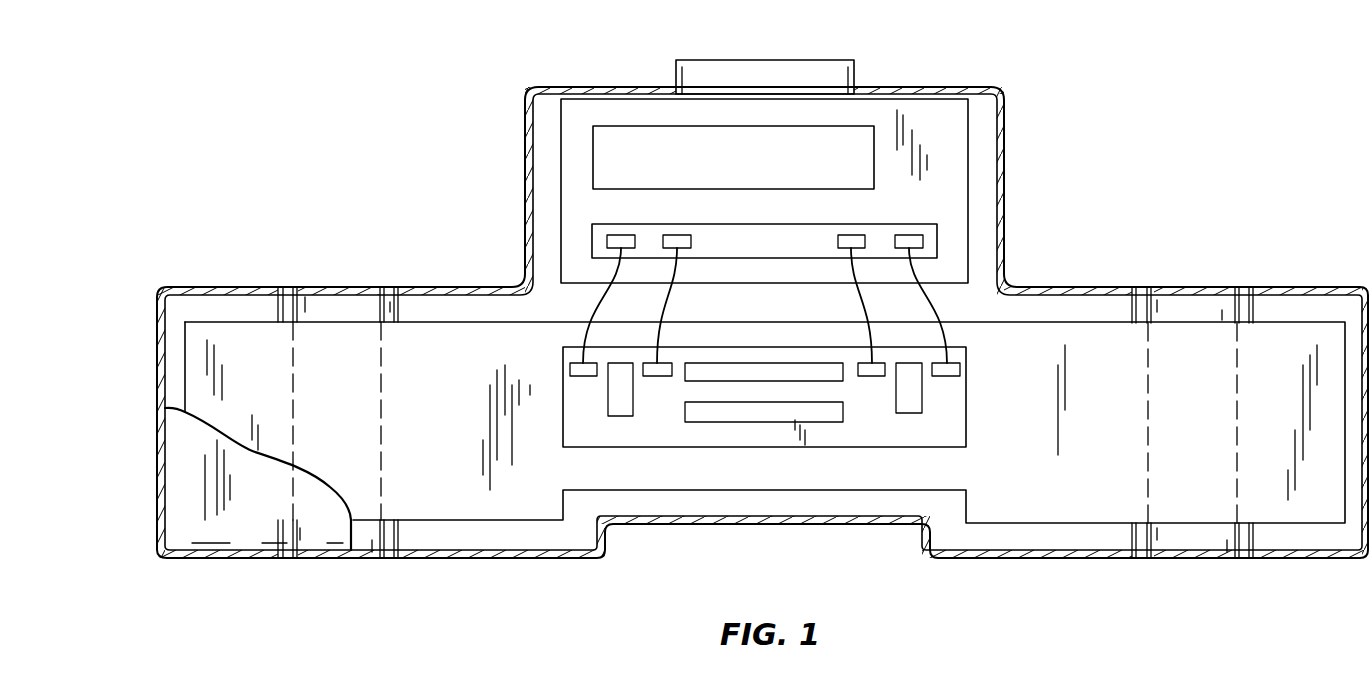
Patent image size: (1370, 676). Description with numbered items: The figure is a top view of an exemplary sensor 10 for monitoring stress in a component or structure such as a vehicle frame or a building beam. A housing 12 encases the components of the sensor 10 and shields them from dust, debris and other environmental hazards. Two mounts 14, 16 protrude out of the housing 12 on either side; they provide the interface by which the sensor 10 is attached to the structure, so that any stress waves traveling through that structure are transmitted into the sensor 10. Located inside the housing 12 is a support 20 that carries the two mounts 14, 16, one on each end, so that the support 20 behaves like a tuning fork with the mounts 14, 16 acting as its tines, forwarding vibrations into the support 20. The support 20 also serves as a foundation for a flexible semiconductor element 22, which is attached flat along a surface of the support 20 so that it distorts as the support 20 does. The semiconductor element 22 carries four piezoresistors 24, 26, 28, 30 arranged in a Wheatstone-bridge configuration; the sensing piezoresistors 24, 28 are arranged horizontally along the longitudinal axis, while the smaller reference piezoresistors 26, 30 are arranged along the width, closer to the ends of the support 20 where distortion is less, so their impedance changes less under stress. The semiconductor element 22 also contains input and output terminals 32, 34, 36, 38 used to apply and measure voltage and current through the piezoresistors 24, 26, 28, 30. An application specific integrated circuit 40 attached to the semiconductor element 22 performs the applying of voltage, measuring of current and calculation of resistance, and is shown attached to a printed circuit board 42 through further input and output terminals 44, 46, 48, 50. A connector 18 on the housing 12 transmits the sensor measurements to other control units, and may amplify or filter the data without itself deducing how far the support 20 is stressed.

The sensor 10 is at (366, 158).
The housing 12 is at (965, 87).
The mount 14 is at (335, 297).
The mount 16 is at (1198, 297).
The connector 18 is at (800, 58).
The support 20 is at (470, 516).
The semiconductor element 22 is at (722, 437).
The piezoresistor 24 is at (772, 373).
The piezoresistor 26 is at (621, 416).
The piezoresistor 28 is at (760, 415).
The piezoresistor 30 is at (911, 414).
The input and output terminal 32 is at (578, 376).
The input and output terminal 34 is at (657, 377).
The input and output terminal 36 is at (862, 377).
The input and output terminal 38 is at (953, 377).
The application specific integrated circuit (ASIC) 40 is at (620, 140).
The printed circuit board (PCB) 42 is at (962, 178).
The input and output terminal 44 is at (630, 240).
The input and output terminal 46 is at (685, 240).
The input and output terminal 48 is at (860, 240).
The input and output terminal 50 is at (915, 240).